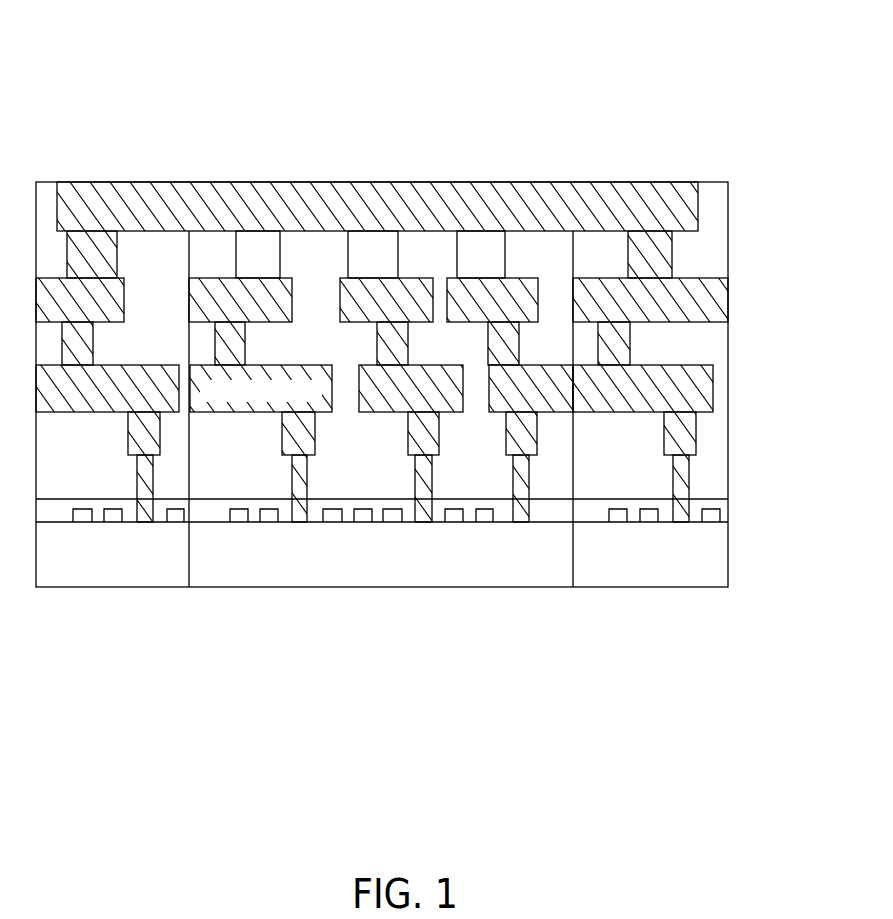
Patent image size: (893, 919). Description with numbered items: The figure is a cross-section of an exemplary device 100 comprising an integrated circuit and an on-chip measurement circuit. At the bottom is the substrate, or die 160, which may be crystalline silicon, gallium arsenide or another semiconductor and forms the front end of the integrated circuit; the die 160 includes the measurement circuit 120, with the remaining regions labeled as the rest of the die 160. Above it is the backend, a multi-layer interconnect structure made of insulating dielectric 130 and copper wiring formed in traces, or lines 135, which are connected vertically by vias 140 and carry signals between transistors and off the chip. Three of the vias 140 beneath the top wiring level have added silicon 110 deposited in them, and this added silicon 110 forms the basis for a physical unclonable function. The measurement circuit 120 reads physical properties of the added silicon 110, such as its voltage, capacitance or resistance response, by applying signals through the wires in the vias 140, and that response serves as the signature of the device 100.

The device 100 is at (698, 42).
The added silicon 110 is at (240, 268).
The measurement circuit 120 is at (542, 573).
The dielectric 130 is at (121, 357).
The lines 135 is at (60, 310).
The vias 140 is at (128, 432).
The die 160 is at (170, 573).